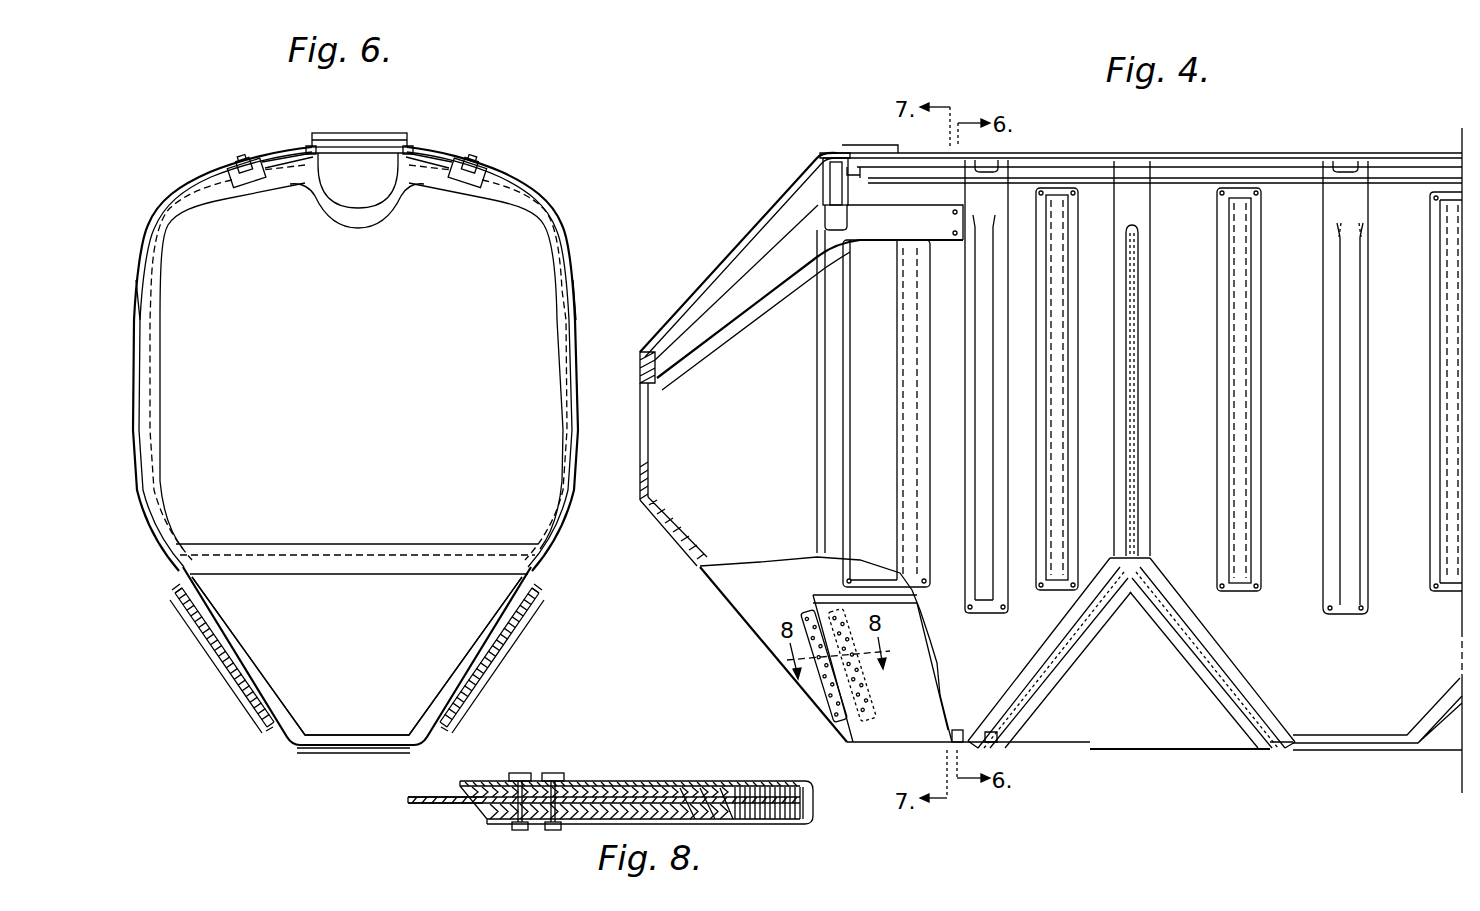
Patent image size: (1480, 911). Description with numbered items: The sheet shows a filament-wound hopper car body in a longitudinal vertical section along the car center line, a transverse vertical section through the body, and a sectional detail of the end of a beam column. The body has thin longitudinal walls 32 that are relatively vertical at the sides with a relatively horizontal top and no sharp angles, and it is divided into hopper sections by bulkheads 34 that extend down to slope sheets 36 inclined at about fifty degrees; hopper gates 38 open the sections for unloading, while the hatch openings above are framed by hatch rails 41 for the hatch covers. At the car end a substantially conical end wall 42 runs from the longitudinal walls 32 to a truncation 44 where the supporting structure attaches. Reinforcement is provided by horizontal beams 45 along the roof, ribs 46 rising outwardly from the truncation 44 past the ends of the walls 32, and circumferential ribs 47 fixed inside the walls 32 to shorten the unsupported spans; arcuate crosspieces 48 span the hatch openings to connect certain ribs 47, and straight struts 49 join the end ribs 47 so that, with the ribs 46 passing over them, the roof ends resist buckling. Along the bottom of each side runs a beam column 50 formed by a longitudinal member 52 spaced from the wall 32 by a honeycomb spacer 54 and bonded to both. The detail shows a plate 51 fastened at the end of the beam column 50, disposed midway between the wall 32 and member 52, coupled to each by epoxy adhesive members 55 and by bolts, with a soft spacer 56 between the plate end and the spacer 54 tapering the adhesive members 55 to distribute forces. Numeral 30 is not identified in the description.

In FIG. 4, the center post 30 is at (1140, 299).
In FIG. 6, the longitudinal walls 32 is at (220, 641).
In FIG. 8, the longitudinal walls 32 is at (630, 781).
In FIG. 6, the bulkheads 34 is at (344, 359).
In FIG. 6, the slope sheets 36 is at (348, 660).
In FIG. 4, the slope sheets 36 is at (1190, 650).
In FIG. 4, the hopper gates 38 is at (1313, 752).
In FIG. 6, the hatch rails 41 is at (313, 140).
In FIG. 4, the end wall 42 is at (748, 240).
In FIG. 4, the truncation 44 is at (640, 353).
In FIG. 6, the horizontal beams 45 is at (240, 160).
In FIG. 4, the horizontal beams 45 is at (1065, 167).
In FIG. 4, the ribs 46 is at (770, 300).
In FIG. 6, the ribs 47 is at (177, 188).
In FIG. 4, the ribs 47 is at (900, 382).
In FIG. 6, the arcuate crosspieces 48 is at (418, 170).
In FIG. 4, the arcuate crosspieces 48 is at (985, 226).
In FIG. 4, the straight struts 49 is at (826, 185).
In FIG. 6, the beam columns 50 is at (231, 693).
In FIG. 4, the beam columns 50 is at (920, 705).
In FIG. 8, the beam columns 50 is at (775, 776).
In FIG. 4, the plate 51 is at (810, 613).
In FIG. 8, the plate 51 is at (458, 789).
In FIG. 6, the longitudinal members 52 is at (252, 712).
In FIG. 8, the longitudinal members 52 is at (757, 825).
In FIG. 6, the spacers 54 is at (220, 653).
In FIG. 8, the spacers 54 is at (808, 820).
In FIG. 8, the adhesive members 55 is at (472, 806).
In FIG. 8, the spacer 56 is at (686, 787).